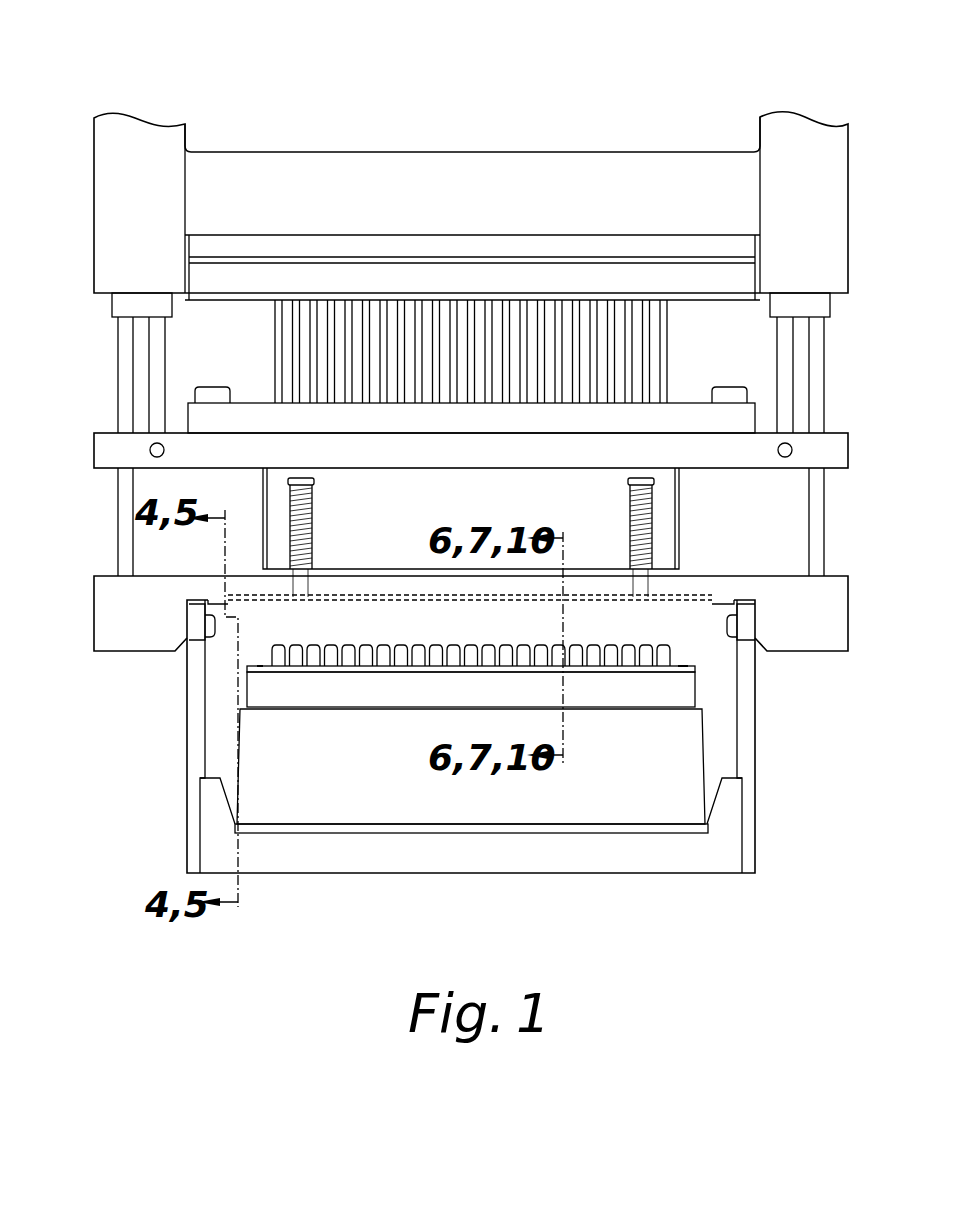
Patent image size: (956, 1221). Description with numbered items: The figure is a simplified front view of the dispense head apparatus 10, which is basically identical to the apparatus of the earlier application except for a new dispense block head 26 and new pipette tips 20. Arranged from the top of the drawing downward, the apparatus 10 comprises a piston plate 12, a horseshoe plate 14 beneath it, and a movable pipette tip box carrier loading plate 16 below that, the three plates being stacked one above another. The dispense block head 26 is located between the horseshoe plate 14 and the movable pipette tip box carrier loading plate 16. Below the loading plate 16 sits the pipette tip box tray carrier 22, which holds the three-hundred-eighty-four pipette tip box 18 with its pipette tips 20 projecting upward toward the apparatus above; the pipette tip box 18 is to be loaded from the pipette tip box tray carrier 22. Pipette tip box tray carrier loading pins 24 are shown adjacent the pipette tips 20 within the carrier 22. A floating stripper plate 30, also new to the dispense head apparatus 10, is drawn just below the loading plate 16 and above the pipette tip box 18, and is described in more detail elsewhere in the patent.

The dispense head apparatus 10 is at (575, 81).
The piston plate 12 is at (93, 197).
The horseshoe plate 14 is at (93, 450).
The movable pipette tip box carrier loading plate 16 is at (93, 612).
The 384 pipette tip box 18 is at (703, 767).
The pipette tips 20 is at (663, 653).
The pipette tip box tray carrier 22 is at (755, 753).
The pipette tip box tray carrier loading pins 24 is at (733, 635).
The dispense block head 26 is at (265, 513).
The floating stripper plate 30 is at (252, 602).